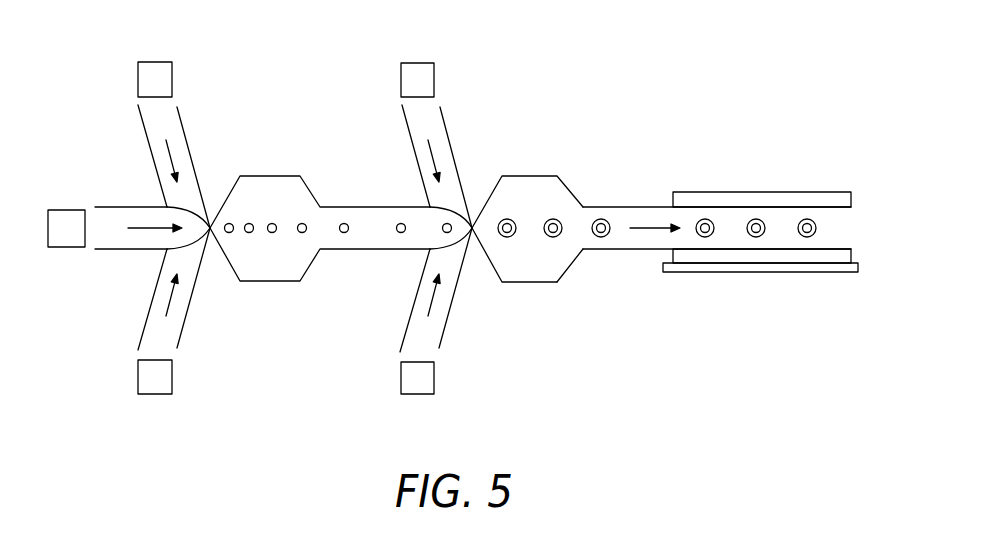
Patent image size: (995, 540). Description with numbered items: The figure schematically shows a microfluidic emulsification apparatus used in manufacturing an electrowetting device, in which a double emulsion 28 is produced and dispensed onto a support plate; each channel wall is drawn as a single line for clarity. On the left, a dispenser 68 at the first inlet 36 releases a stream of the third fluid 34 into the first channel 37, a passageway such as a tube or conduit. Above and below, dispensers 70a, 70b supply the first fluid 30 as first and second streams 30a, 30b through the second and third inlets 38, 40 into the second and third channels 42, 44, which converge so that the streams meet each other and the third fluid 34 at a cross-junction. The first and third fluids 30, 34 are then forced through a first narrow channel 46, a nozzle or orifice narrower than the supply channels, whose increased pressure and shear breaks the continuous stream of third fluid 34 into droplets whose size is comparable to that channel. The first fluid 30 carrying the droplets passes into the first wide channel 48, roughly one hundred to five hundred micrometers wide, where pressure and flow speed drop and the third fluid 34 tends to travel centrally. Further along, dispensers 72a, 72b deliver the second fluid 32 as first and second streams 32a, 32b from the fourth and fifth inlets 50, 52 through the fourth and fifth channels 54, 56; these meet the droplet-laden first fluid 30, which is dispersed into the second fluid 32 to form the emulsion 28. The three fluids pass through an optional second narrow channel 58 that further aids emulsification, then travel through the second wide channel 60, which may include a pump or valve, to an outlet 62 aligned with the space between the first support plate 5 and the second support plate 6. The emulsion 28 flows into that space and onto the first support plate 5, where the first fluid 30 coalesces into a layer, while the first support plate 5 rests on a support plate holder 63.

The first support plate 5 is at (842, 273).
The second support plate 6 is at (841, 200).
The emulsion 28 is at (727, 222).
The first fluid 30 is at (253, 185).
The first stream of the first fluid 30a is at (182, 143).
The second stream of the first fluid 30b is at (183, 316).
The second fluid 32 is at (498, 262).
The first stream of the second fluid 32a is at (447, 143).
The second stream of the second fluid 32b is at (445, 316).
The third fluid 34 is at (108, 238).
The first inlet 36 is at (95, 208).
The first channel 37 is at (139, 250).
The second inlet 38 is at (146, 107).
The third inlet 40 is at (140, 352).
The second channel 42 is at (178, 113).
The third channel 44 is at (178, 346).
The first narrow channel 46 is at (210, 222).
The first wide channel 48 is at (291, 176).
The fourth inlet 50 is at (408, 107).
The fifth inlet 52 is at (406, 351).
The fourth channel 54 is at (443, 112).
The fifth channel 56 is at (441, 346).
The second narrow channel 58 is at (472, 218).
The second wide channel 60 is at (555, 176).
The outlet 62 is at (670, 207).
The support plate holder 63 is at (672, 273).
The dispenser for the third fluid 68 is at (67, 249).
The dispenser of the first fluid 70a is at (155, 62).
The dispenser of the first fluid 70b is at (157, 395).
The dispenser of the second fluid 72a is at (417, 62).
The dispenser of the second fluid 72b is at (417, 396).